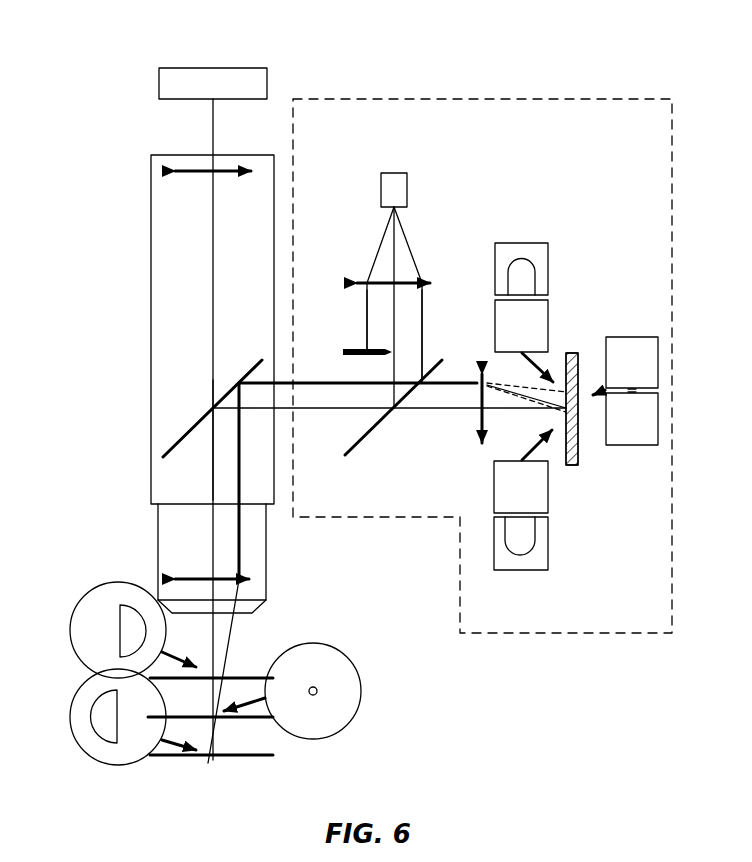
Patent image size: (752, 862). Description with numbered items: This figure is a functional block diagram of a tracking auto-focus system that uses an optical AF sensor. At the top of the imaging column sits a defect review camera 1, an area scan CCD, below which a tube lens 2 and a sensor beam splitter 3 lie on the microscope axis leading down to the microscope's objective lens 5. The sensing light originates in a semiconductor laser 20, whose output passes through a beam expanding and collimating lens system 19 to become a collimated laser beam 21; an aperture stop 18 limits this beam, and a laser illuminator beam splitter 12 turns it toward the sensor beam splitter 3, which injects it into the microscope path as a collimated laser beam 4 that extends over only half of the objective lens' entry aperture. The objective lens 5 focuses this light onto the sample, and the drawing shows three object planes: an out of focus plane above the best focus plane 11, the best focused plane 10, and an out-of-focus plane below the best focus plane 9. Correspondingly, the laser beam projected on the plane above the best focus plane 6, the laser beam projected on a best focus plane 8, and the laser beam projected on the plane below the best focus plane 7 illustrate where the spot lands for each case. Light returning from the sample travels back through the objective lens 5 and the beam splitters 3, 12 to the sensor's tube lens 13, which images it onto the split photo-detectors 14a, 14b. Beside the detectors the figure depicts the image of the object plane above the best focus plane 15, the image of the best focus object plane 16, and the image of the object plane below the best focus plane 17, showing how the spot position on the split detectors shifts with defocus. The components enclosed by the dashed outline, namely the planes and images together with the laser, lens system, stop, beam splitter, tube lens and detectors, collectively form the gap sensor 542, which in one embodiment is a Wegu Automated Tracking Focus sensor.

The defect review camera 1 is at (213, 68).
The tube lens 2 is at (200, 172).
The sensor beam splitter 3 is at (200, 415).
The collimated laser beam 4 is at (220, 448).
The objective lens 5 is at (200, 578).
The laser beam projected on the plane above the best focus plane 6 is at (127, 633).
The laser beam projected on the plane below the best focus plane 7 is at (100, 722).
The laser beam projected on a best focus plane 8 is at (361, 690).
The out-of-focus plane below the best focus plane 9 is at (240, 755).
The best focused plane 10 is at (230, 717).
The out of focus plane above the best focus plane 11 is at (252, 678).
The laser illuminator beam splitter 12 is at (358, 450).
The sensor's tube lens 13 is at (478, 425).
The split photo-detector 14a is at (572, 465).
The split photo-detector 14b is at (575, 353).
The image of the object plane above the best focus plane 15 is at (520, 570).
The image of the best focus object plane 16 is at (632, 337).
The image of the object plane below the best focus plane 17 is at (522, 243).
The aperture stop 18 is at (356, 348).
The beam expanding and collimating lens system 19 is at (385, 283).
The semiconductor laser 20 is at (394, 173).
The collimated laser beam 21 is at (394, 326).
The gap sensor 542 is at (673, 200).